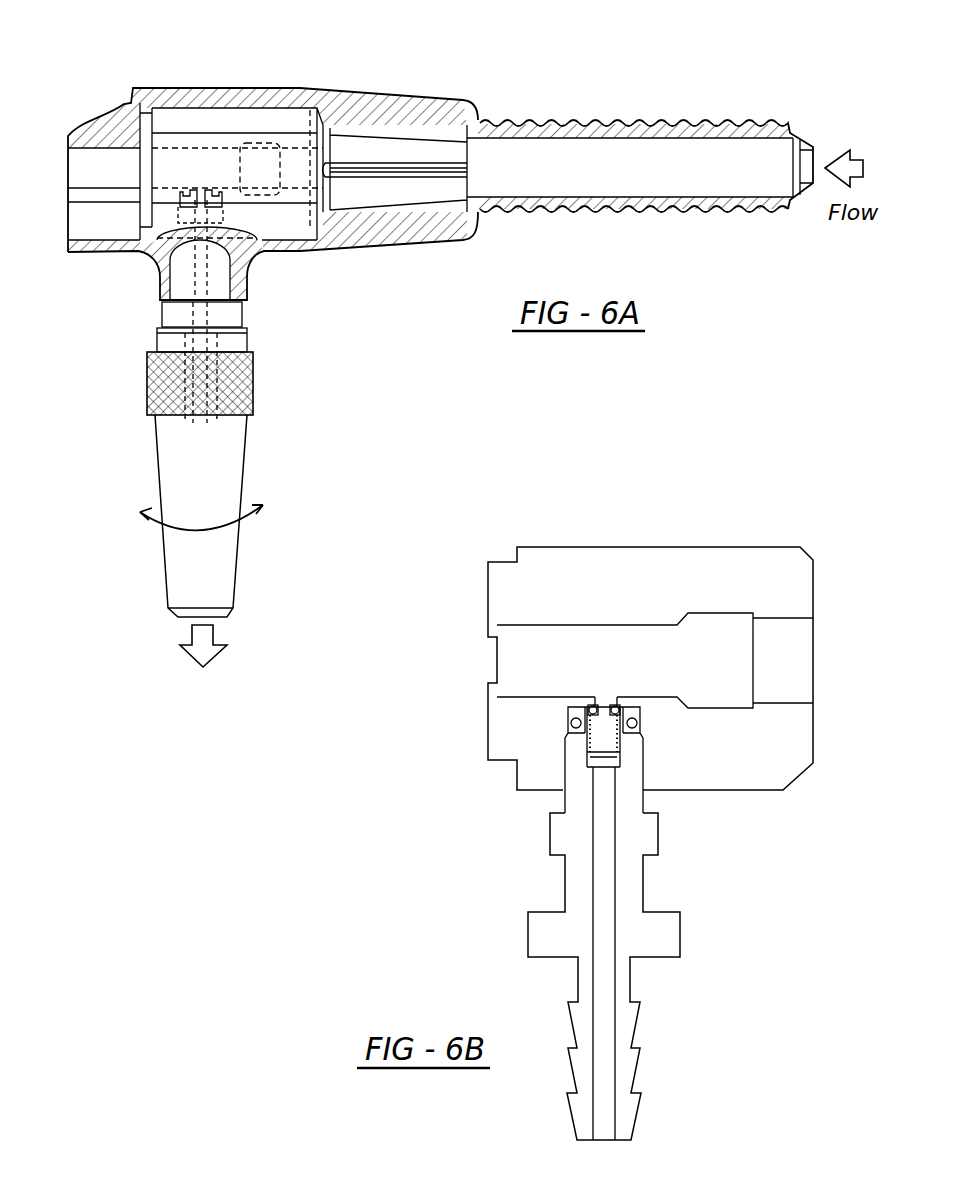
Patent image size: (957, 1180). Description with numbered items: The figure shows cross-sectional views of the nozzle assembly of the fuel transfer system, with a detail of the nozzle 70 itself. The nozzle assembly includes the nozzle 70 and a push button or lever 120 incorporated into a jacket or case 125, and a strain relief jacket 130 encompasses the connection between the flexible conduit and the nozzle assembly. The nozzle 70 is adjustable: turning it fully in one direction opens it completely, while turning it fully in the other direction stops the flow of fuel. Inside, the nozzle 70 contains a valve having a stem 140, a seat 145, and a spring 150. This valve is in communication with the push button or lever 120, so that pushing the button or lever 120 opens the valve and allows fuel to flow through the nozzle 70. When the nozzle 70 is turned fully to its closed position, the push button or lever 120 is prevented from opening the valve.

In FIG. 6A, the nozzle 70 is at (207, 568).
In FIG. 6A, the push button or lever 120 is at (200, 167).
In FIG. 6B, the push button or lever 120 is at (605, 653).
In FIG. 6A, the jacket or case 125 is at (407, 90).
In FIG. 6A, the strain relief jacket 130 is at (678, 122).
In FIG. 6B, the stem 140 is at (603, 725).
In FIG. 6B, the seat 145 is at (622, 710).
In FIG. 6B, the spring 150 is at (605, 765).